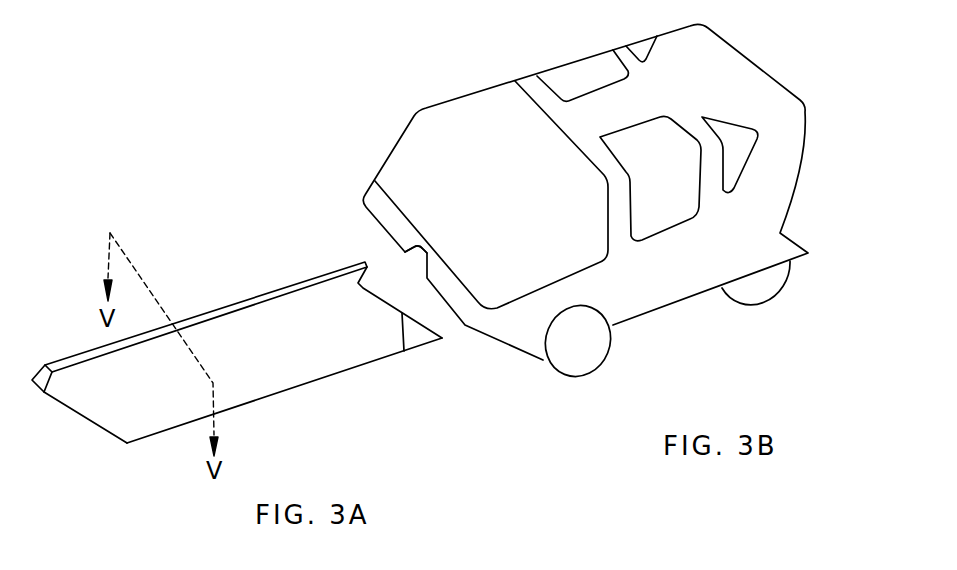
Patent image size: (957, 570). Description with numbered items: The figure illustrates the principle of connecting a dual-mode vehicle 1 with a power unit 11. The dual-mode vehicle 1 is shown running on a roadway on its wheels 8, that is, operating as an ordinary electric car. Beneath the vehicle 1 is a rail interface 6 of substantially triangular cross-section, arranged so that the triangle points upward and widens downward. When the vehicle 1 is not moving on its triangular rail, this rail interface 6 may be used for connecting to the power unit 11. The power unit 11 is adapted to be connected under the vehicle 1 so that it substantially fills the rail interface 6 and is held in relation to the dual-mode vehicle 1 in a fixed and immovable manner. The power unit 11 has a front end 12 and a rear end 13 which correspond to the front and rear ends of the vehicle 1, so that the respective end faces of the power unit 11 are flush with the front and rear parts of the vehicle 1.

In FIG. 3B, the dual-mode vehicle 1 is at (536, 93).
In FIG. 3B, the rail interface 6 is at (422, 262).
In FIG. 3B, the wheels 8 is at (597, 353).
In FIG. 3A, the power unit 11 is at (317, 308).
In FIG. 3A, the front end 12 is at (63, 404).
In FIG. 3A, the rear end 13 is at (404, 351).